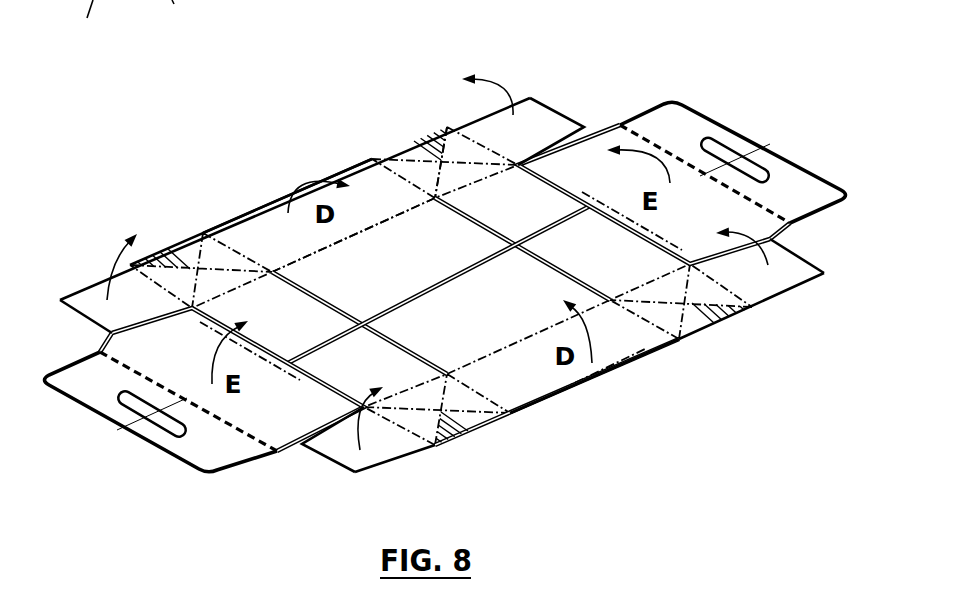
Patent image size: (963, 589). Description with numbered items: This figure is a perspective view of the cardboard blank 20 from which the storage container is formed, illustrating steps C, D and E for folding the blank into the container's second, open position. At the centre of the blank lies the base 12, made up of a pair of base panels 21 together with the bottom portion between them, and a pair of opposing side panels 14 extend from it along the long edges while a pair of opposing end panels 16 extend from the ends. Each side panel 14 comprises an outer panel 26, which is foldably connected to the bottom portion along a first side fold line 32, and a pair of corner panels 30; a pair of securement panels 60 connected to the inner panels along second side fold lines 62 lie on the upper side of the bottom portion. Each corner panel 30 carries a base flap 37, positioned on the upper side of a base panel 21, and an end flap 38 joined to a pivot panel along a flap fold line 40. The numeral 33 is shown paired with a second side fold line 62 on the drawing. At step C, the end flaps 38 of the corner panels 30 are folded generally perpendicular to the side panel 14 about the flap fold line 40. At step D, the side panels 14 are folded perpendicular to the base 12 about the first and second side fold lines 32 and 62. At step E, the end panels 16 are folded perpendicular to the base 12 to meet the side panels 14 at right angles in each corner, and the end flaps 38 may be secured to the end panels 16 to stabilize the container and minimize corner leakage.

The base 12 is at (431, 218).
The side panel 14 is at (224, 205).
The end panel 16 is at (445, 287).
The cardboard blank 20 is at (752, 75).
The base panel 21 is at (173, 16).
The outer panel 26 is at (441, 286).
The corner panel 30 is at (386, 116).
The first side fold line 32 is at (643, 356).
The fold line 33 is at (387, 220).
The base flap 37 is at (449, 284).
The end flap 38 is at (570, 132).
The flap fold line 40 is at (453, 127).
The securement panel 60 is at (439, 284).
The second side fold line 62 is at (441, 291).